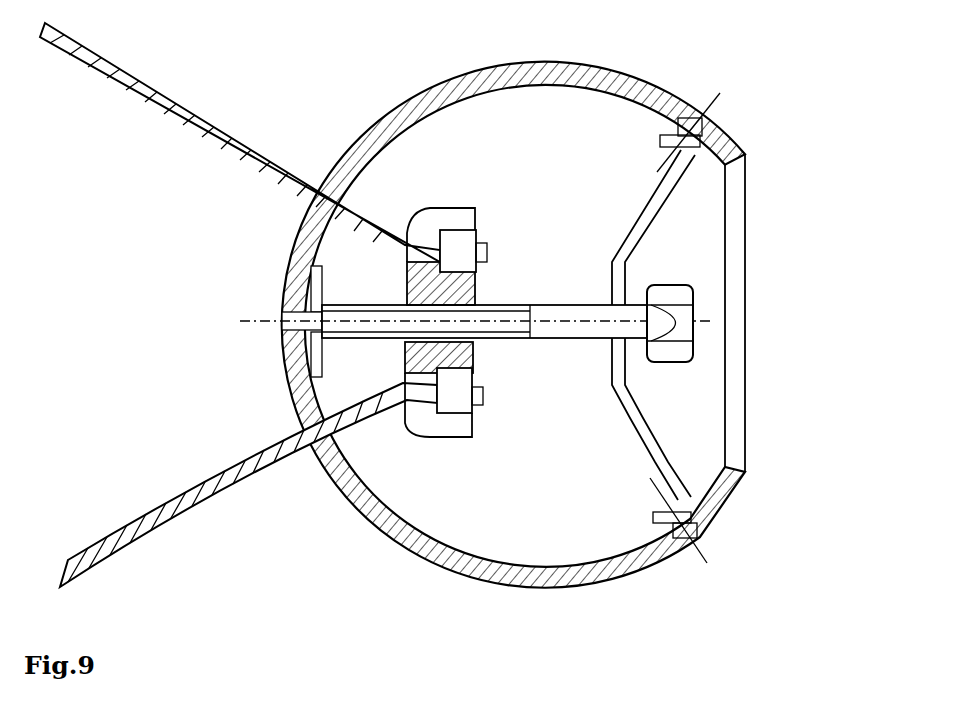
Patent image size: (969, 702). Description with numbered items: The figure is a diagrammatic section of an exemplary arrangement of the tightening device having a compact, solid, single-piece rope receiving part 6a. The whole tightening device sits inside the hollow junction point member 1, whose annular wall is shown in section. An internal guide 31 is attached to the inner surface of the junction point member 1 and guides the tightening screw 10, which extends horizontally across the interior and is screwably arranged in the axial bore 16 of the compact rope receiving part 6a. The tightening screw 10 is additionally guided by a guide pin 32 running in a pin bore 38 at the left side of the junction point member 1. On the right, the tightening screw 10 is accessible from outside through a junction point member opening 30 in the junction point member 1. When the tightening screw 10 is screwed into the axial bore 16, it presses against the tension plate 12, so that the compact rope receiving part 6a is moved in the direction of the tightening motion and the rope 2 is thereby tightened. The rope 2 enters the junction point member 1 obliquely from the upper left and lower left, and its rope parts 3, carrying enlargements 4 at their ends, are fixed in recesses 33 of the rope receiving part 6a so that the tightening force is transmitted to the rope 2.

The junction point member 1 is at (520, 52).
The rope 2 is at (88, 45).
The rope parts 3 is at (478, 232).
The enlargements 4 is at (463, 253).
The compact, solid rope receiving part 6a is at (447, 208).
The tightening screw 10 is at (577, 338).
The tension plate 12 is at (318, 300).
The axial bore 16 is at (403, 342).
The junction point member opening 30 is at (742, 190).
The internal guide 31 is at (670, 473).
The guide pin 32 is at (287, 316).
The recesses 33 is at (475, 368).
The pin bore 38 is at (287, 330).